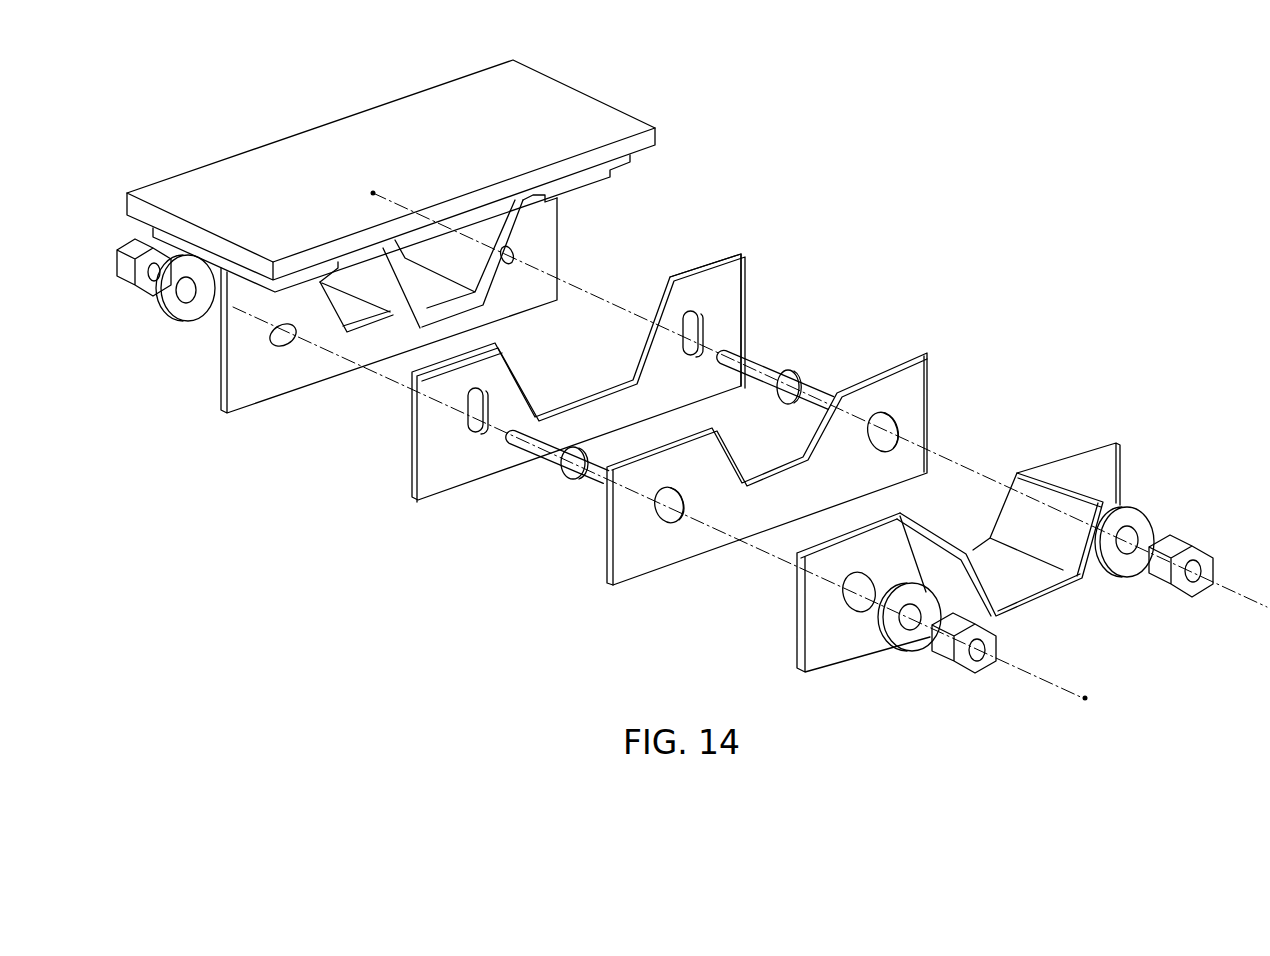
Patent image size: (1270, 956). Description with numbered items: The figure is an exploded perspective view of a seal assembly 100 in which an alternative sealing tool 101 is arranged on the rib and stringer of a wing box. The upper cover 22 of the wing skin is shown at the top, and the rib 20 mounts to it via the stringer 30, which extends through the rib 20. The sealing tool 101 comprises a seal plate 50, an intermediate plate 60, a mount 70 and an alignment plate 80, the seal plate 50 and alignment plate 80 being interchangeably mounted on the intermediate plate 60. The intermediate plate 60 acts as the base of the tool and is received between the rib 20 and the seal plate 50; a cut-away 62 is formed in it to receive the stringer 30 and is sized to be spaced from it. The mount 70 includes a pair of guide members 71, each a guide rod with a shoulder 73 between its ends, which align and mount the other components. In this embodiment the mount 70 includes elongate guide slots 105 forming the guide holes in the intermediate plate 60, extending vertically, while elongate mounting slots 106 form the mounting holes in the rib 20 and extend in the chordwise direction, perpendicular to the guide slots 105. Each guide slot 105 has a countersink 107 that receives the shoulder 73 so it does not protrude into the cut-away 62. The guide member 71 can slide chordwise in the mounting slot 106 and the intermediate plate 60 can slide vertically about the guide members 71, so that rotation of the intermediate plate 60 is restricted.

The rib 20 is at (237, 392).
The upper cover 22 is at (560, 103).
The stringer 30 is at (535, 228).
The seal plate 50 is at (1110, 470).
The intermediate plate 60 is at (747, 289).
The cut-away 62 is at (698, 300).
The mount 70 is at (684, 453).
The guide member 71 is at (590, 476).
The shoulder 73 is at (587, 449).
The alignment plate 80 is at (908, 388).
The seal assembly 100 is at (950, 212).
The sealing tool 101 is at (1082, 270).
The guide slot 105 is at (700, 332).
The mounting slot 106 is at (513, 254).
The countersink 107 is at (488, 408).